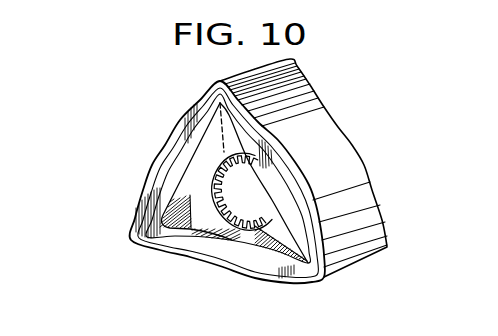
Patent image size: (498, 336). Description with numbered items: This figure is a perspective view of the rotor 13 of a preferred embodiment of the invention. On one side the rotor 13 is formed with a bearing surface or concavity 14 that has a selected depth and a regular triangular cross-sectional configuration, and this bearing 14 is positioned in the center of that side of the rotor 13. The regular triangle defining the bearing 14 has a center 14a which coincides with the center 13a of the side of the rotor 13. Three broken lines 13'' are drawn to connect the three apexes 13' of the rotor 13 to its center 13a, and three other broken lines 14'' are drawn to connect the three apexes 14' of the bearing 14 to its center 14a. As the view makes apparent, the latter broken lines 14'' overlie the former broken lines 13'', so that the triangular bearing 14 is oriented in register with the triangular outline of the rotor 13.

The rotor 13 is at (324, 168).
The apexes of the rotor 13' is at (235, 182).
The broken lines 13'' is at (174, 120).
The center of the side of the rotor 13a is at (237, 205).
The bearing surface or concavity 14 is at (187, 183).
The apexes of the bearing 14' is at (232, 192).
The broken lines 14'' is at (204, 280).
The center of the bearing 14a is at (202, 181).